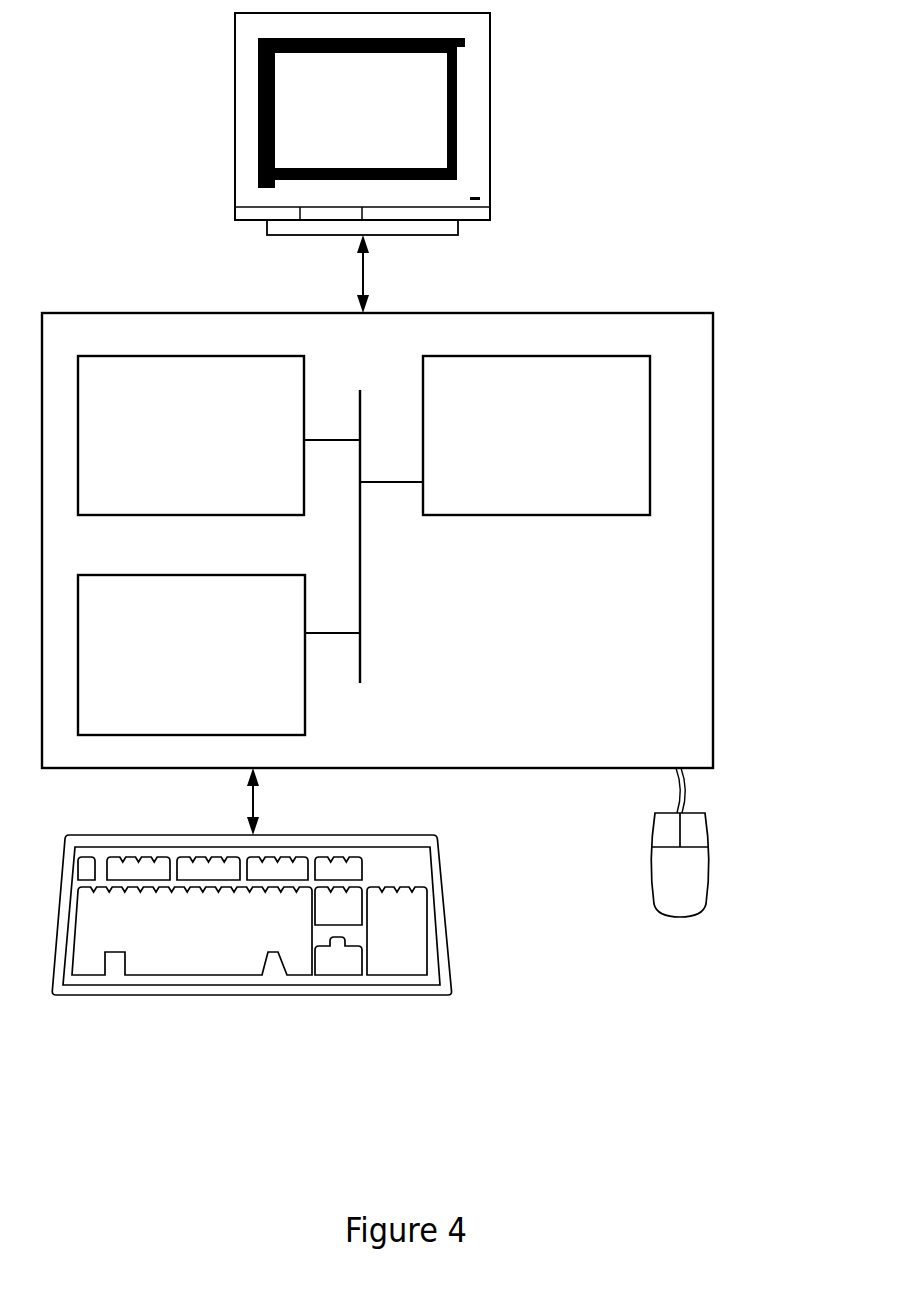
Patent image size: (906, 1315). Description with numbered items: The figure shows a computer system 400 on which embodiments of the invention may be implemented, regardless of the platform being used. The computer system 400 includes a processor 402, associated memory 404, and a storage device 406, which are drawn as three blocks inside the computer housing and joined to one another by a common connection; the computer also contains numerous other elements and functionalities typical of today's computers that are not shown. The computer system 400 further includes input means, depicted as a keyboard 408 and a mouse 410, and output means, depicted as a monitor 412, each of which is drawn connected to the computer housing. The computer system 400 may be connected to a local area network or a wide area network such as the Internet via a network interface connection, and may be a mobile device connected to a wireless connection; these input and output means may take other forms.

The computer system 400 is at (733, 168).
The processor 402 is at (531, 447).
The memory 404 is at (170, 447).
The storage device 406 is at (168, 667).
The keyboard 408 is at (163, 954).
The mouse 410 is at (657, 889).
The monitor 412 is at (384, 129).